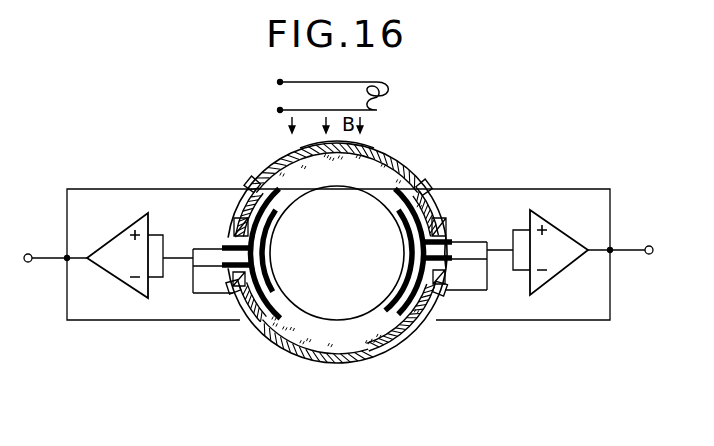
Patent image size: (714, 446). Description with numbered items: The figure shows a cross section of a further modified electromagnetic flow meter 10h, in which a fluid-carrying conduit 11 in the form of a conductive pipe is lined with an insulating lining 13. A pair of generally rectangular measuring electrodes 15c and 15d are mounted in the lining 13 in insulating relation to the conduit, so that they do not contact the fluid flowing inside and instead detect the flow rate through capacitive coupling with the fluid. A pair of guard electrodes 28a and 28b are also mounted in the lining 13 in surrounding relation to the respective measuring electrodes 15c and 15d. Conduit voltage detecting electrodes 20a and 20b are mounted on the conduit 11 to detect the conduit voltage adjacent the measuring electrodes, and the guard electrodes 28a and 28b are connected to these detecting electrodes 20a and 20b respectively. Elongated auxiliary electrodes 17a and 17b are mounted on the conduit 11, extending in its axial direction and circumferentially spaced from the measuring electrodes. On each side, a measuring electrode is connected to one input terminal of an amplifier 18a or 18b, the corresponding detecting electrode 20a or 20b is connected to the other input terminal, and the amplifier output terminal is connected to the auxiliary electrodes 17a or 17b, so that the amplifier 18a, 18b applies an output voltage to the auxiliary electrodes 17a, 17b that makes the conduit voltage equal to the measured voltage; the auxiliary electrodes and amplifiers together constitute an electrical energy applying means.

The electromagnetic flow meter 10h is at (397, 154).
The fluid-carrying conduit 11 is at (363, 151).
The lining 13 is at (307, 160).
The measuring electrode 15c is at (393, 207).
The measuring electrode 15d is at (280, 208).
The auxiliary electrode 17a is at (428, 182).
The auxiliary electrode 17b is at (249, 182).
The amplifier 18a is at (580, 222).
The amplifier 18b is at (102, 268).
The detecting electrode 20a is at (446, 298).
The detecting electrode 20b is at (231, 296).
The guard electrode 28a is at (438, 212).
The guard electrode 28b is at (233, 228).